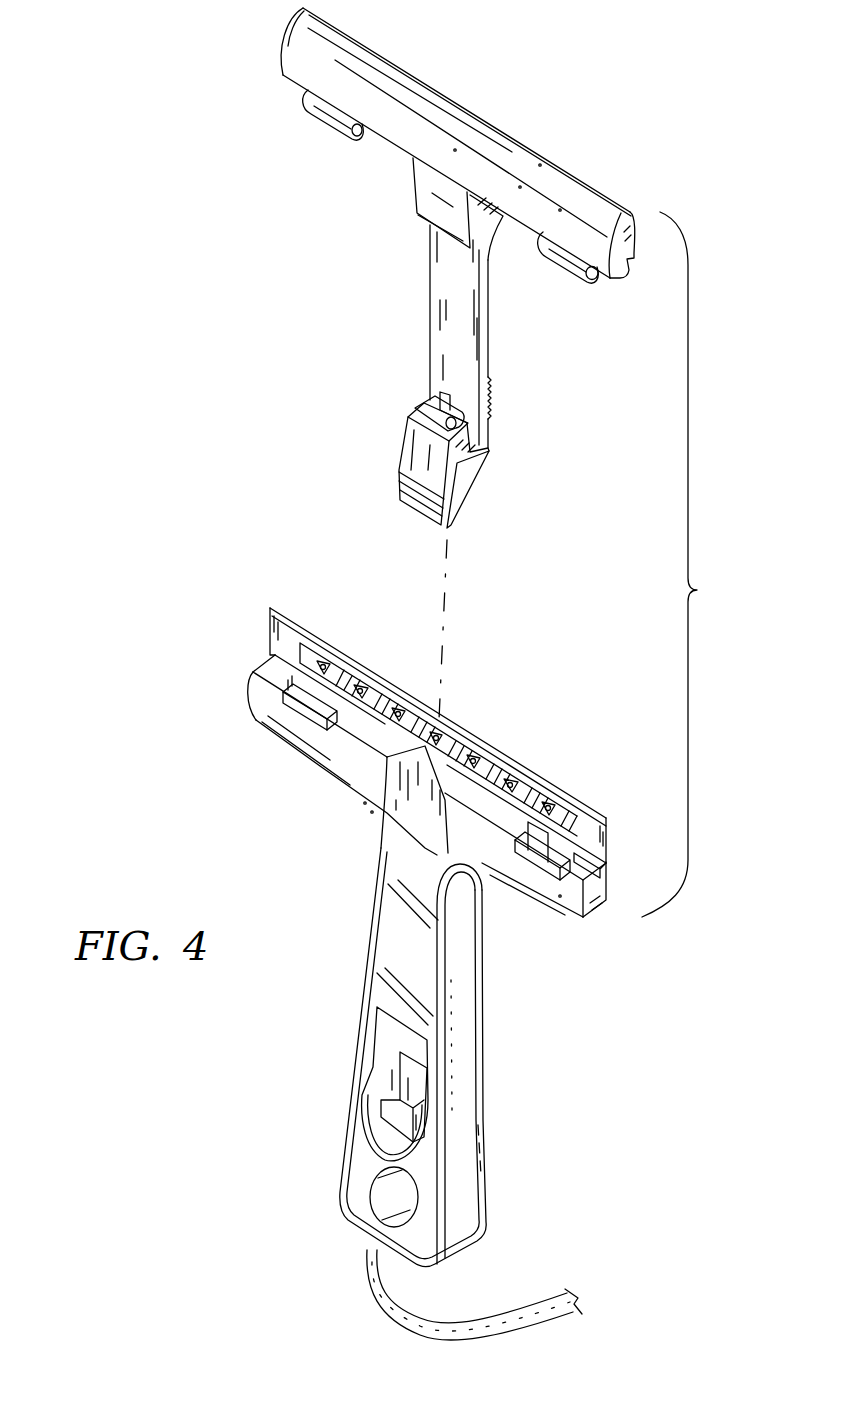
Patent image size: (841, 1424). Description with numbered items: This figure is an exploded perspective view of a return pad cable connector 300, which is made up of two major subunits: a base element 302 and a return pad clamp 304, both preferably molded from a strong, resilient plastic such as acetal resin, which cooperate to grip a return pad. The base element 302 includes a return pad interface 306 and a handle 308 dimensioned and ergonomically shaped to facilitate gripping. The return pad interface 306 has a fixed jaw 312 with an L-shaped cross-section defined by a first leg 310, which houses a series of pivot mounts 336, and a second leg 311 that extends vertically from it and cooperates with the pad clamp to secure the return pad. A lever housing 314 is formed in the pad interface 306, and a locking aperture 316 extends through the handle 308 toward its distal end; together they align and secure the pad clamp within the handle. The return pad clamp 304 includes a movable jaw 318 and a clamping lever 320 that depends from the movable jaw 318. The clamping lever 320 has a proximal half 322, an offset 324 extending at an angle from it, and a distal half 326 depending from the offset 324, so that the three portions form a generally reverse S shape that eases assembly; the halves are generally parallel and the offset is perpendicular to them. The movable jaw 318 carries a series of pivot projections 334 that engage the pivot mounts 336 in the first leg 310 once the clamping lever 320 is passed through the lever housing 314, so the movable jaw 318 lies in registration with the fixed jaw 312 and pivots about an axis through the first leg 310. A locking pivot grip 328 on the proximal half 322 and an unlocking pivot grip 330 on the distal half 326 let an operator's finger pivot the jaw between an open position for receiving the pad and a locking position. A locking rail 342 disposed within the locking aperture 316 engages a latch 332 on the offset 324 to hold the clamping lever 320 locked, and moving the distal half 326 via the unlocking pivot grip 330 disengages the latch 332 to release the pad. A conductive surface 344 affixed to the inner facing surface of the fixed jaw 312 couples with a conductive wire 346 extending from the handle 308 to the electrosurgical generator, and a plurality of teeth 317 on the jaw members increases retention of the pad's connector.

The cable connector 300 is at (695, 564).
The base element 302 is at (450, 1094).
The return pad clamp 304 is at (421, 364).
The return pad interface 306 is at (407, 779).
The handle 308 is at (467, 1180).
The first leg 310 is at (607, 896).
The second leg 311 is at (603, 888).
The fixed jaw 312 is at (490, 728).
The lever housing 314 is at (428, 803).
The locking aperture 316 is at (398, 1094).
The teeth 317 is at (330, 665).
The movable jaw 318 is at (305, 44).
The clamping lever 320 is at (404, 350).
The proximal half 322 is at (485, 343).
The offset 324 is at (488, 449).
The distal half 326 is at (460, 483).
The locking pivot grip 328 is at (493, 397).
The unlocking pivot grip 330 is at (400, 488).
The latch 332 is at (427, 401).
The pivot projections 334 is at (332, 123).
The pivot mounts 336 is at (280, 702).
The locking rail 342 is at (400, 1023).
The conductive surface 344 is at (313, 645).
The conductive wire 346 is at (388, 1312).